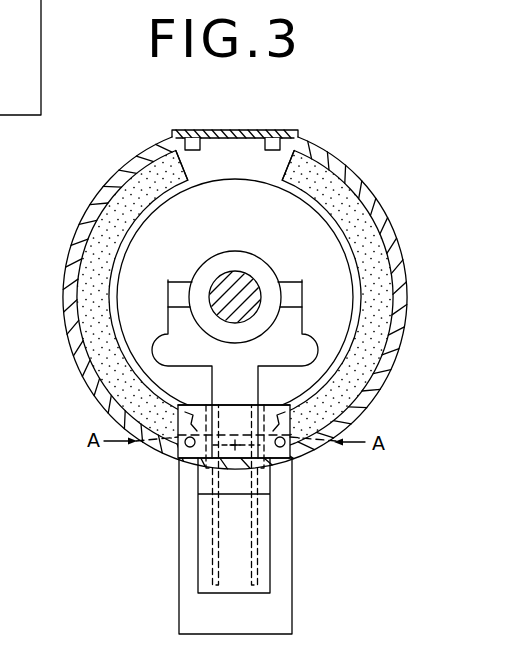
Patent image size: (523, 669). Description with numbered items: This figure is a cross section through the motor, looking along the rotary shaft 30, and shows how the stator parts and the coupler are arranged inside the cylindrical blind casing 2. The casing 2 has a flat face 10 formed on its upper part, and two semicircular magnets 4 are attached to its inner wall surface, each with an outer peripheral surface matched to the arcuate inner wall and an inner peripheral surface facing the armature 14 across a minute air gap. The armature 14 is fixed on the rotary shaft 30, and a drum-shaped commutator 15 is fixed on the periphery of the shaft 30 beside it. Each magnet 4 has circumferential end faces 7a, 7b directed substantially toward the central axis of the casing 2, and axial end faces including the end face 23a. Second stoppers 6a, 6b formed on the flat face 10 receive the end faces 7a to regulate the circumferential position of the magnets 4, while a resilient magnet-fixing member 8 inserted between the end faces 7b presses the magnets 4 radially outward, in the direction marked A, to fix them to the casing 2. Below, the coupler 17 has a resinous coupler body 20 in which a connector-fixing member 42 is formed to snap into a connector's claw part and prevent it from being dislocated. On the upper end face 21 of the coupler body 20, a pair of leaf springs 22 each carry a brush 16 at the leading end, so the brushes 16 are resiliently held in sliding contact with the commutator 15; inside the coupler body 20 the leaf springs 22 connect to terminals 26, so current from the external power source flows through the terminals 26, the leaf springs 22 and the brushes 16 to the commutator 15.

The casing 2 is at (333, 157).
The magnets 4 is at (101, 192).
The second stopper 6a is at (188, 142).
The second stopper 6b is at (275, 142).
The end face 7a is at (275, 165).
The end face 7b is at (182, 425).
The magnet-fixing member 8 is at (234, 452).
The flat face 10 is at (233, 130).
The armature 14 is at (162, 213).
The commutator 15 is at (235, 251).
The brushes 16 is at (180, 287).
The coupler 17 is at (152, 611).
The coupler body 20 is at (287, 619).
The upper end face 21 is at (268, 402).
The leaf springs 22 is at (160, 343).
The end face 23a is at (93, 243).
The terminals 26 is at (212, 545).
The rotary shaft 30 is at (235, 300).
The connector-fixing member 42 is at (268, 580).